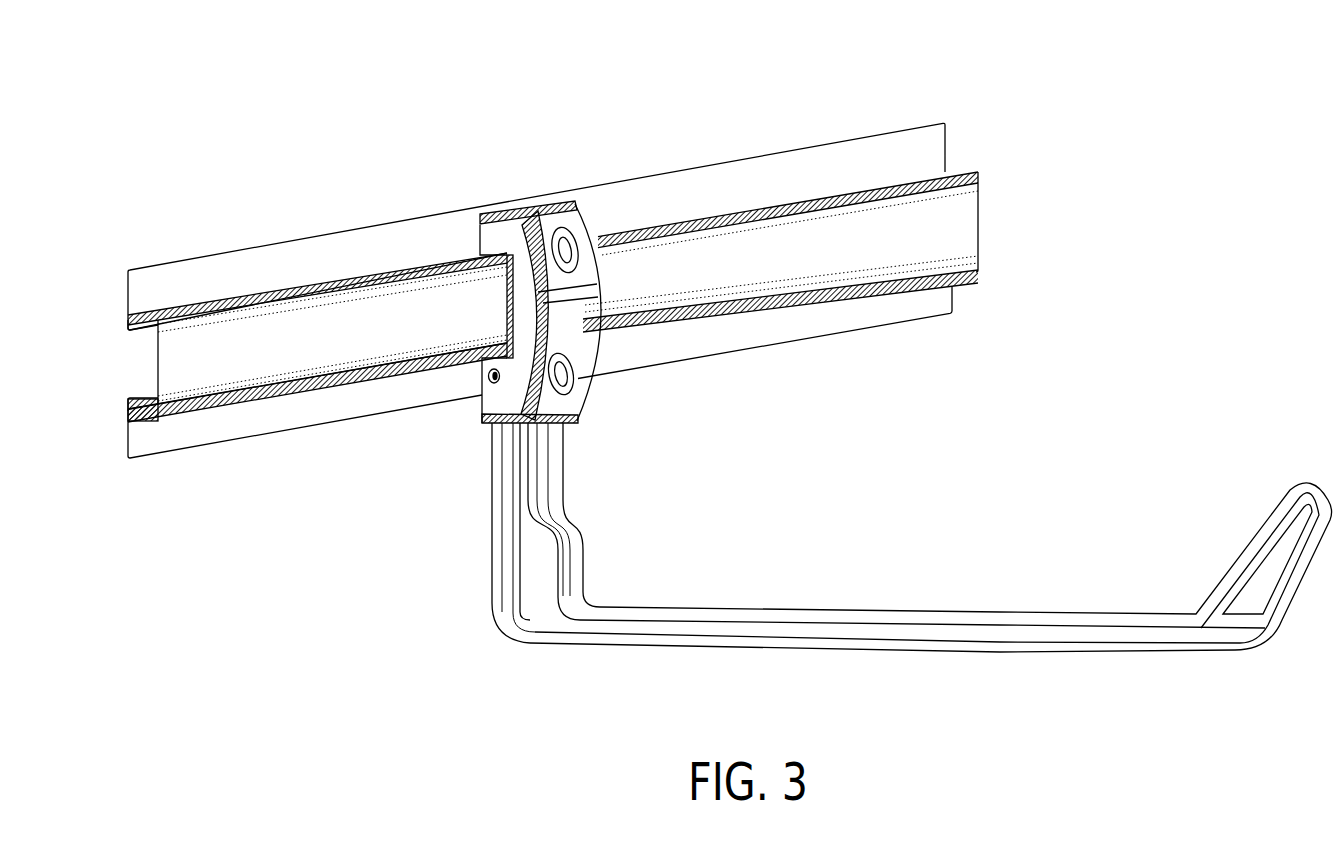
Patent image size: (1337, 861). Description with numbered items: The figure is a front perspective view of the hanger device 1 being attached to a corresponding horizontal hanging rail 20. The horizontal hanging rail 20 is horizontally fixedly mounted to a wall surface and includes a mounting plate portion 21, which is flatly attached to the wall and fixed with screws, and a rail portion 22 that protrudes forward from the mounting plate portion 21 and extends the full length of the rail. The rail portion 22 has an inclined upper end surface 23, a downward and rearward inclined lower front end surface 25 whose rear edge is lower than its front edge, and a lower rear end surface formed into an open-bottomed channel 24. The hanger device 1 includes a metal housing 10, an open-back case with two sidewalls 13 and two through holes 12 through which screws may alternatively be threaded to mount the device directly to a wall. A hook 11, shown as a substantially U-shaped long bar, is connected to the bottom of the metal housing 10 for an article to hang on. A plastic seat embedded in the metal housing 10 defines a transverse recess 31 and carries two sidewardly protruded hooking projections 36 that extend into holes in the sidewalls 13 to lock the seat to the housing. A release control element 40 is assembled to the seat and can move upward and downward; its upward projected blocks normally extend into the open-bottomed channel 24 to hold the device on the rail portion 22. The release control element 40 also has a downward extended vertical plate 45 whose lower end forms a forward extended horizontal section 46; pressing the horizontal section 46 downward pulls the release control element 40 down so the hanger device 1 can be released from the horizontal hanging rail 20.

The hanger device 1 is at (595, 224).
The metal housing 10 is at (602, 291).
The hook 11 is at (575, 562).
The through holes 12 is at (628, 222).
The sidewalls 13 is at (522, 228).
The horizontal hanging rail 20 is at (927, 110).
The mounting plate portion 21 is at (237, 265).
The rail portion 22 is at (787, 270).
The upper end surface 23 is at (150, 334).
The open-bottomed channel 24 is at (133, 427).
The lower front end surface 25 is at (232, 408).
The recess 31 is at (494, 290).
The hooking projections 36 is at (485, 371).
The release control element 40 is at (465, 418).
The vertical plate 45 is at (490, 460).
The horizontal section 46 is at (562, 488).